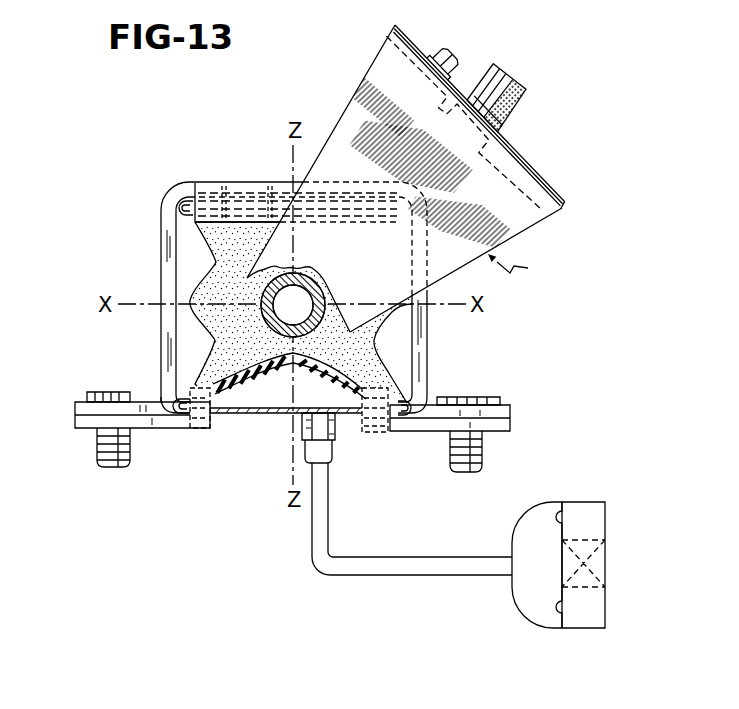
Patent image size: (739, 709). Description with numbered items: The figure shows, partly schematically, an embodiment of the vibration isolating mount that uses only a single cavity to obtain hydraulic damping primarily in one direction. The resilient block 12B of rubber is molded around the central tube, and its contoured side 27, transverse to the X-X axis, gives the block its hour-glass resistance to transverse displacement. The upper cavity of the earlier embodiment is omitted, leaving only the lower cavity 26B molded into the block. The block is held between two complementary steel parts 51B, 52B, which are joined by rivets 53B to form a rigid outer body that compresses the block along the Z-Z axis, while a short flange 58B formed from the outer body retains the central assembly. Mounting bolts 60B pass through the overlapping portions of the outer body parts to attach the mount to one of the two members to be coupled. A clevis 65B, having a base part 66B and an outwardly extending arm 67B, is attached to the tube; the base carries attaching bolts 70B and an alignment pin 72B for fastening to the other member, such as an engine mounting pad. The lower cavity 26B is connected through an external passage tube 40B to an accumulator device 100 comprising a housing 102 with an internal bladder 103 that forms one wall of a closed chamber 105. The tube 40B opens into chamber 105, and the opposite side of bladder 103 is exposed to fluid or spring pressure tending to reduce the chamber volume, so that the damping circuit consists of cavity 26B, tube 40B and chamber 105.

The resilient block 12B is at (380, 356).
The lower cavity 26B is at (272, 399).
The side of the block 27 is at (190, 326).
The external passage tube 40B is at (328, 522).
The outer body part 51B is at (175, 429).
The outer body part 52B is at (161, 242).
The rivet 53B is at (150, 393).
The flange 58B is at (258, 182).
The mounting bolt 60B is at (97, 437).
The clevis 65B is at (529, 268).
The base part of the clevis 66B is at (528, 166).
The arm of the clevis 67B is at (366, 76).
The attaching bolt 70B is at (525, 74).
The alignment pin 72B is at (457, 52).
The accumulator device 100 is at (531, 570).
The housing 102 is at (521, 511).
The bladder 103 is at (558, 571).
The closed chamber 105 is at (522, 598).